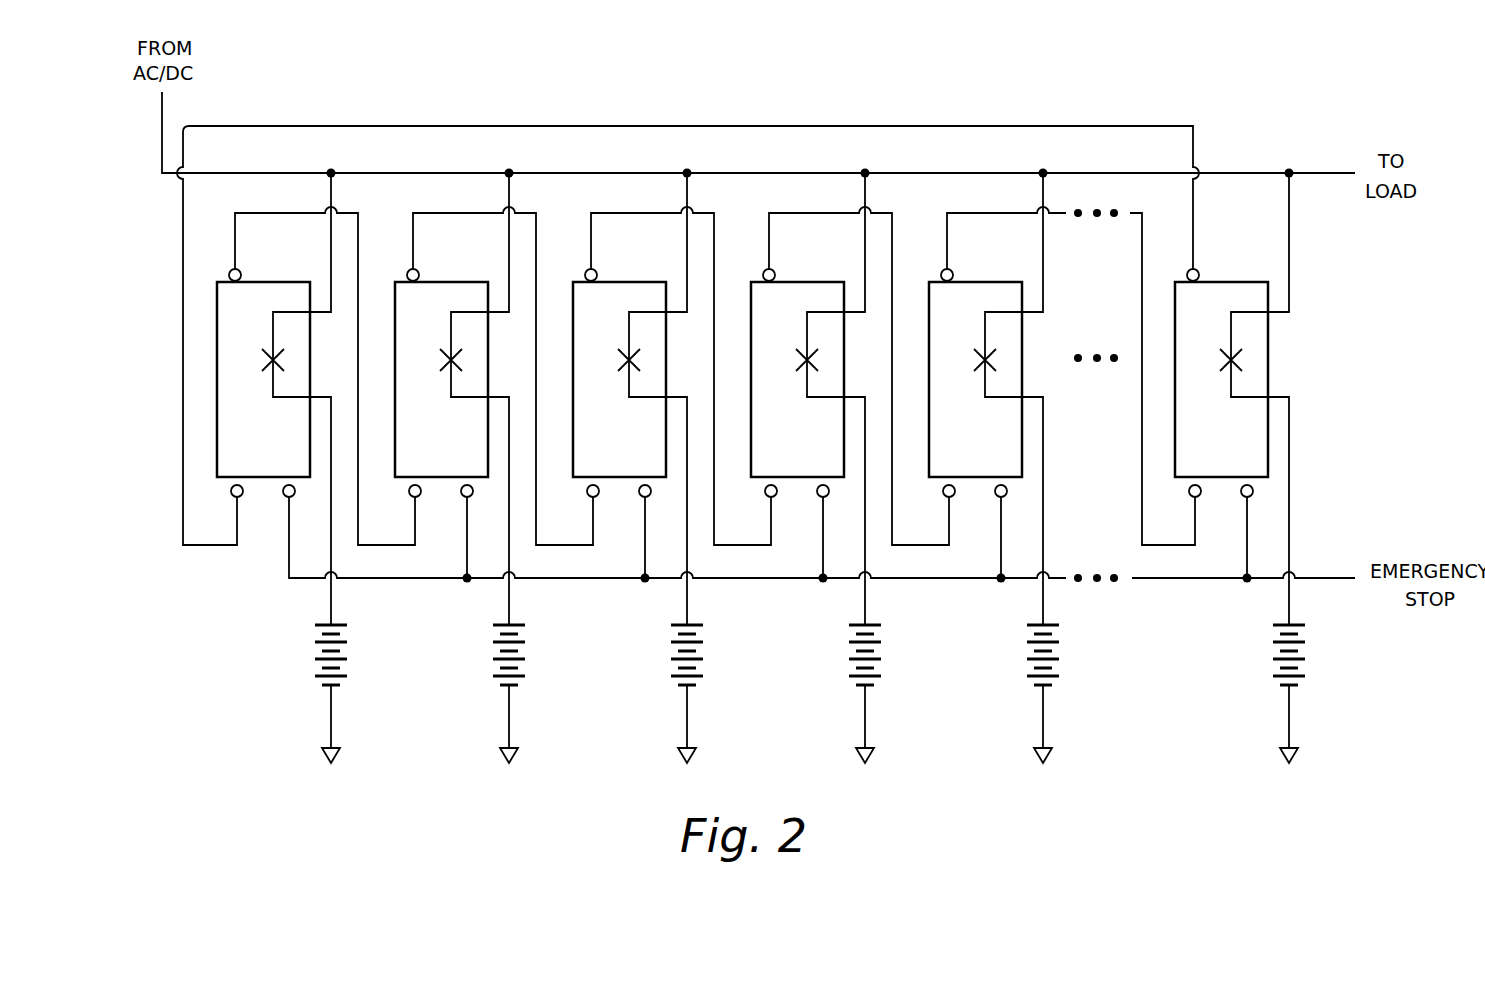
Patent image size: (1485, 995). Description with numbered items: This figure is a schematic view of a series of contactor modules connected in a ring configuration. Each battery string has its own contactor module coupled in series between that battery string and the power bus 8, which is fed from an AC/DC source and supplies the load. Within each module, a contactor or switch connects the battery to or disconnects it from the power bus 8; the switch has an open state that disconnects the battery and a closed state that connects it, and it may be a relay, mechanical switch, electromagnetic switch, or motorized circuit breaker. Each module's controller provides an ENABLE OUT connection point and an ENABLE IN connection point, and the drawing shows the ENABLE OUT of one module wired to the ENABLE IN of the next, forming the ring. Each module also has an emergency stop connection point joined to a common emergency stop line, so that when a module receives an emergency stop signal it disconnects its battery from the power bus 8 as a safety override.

The power bus 8 is at (1245, 173).